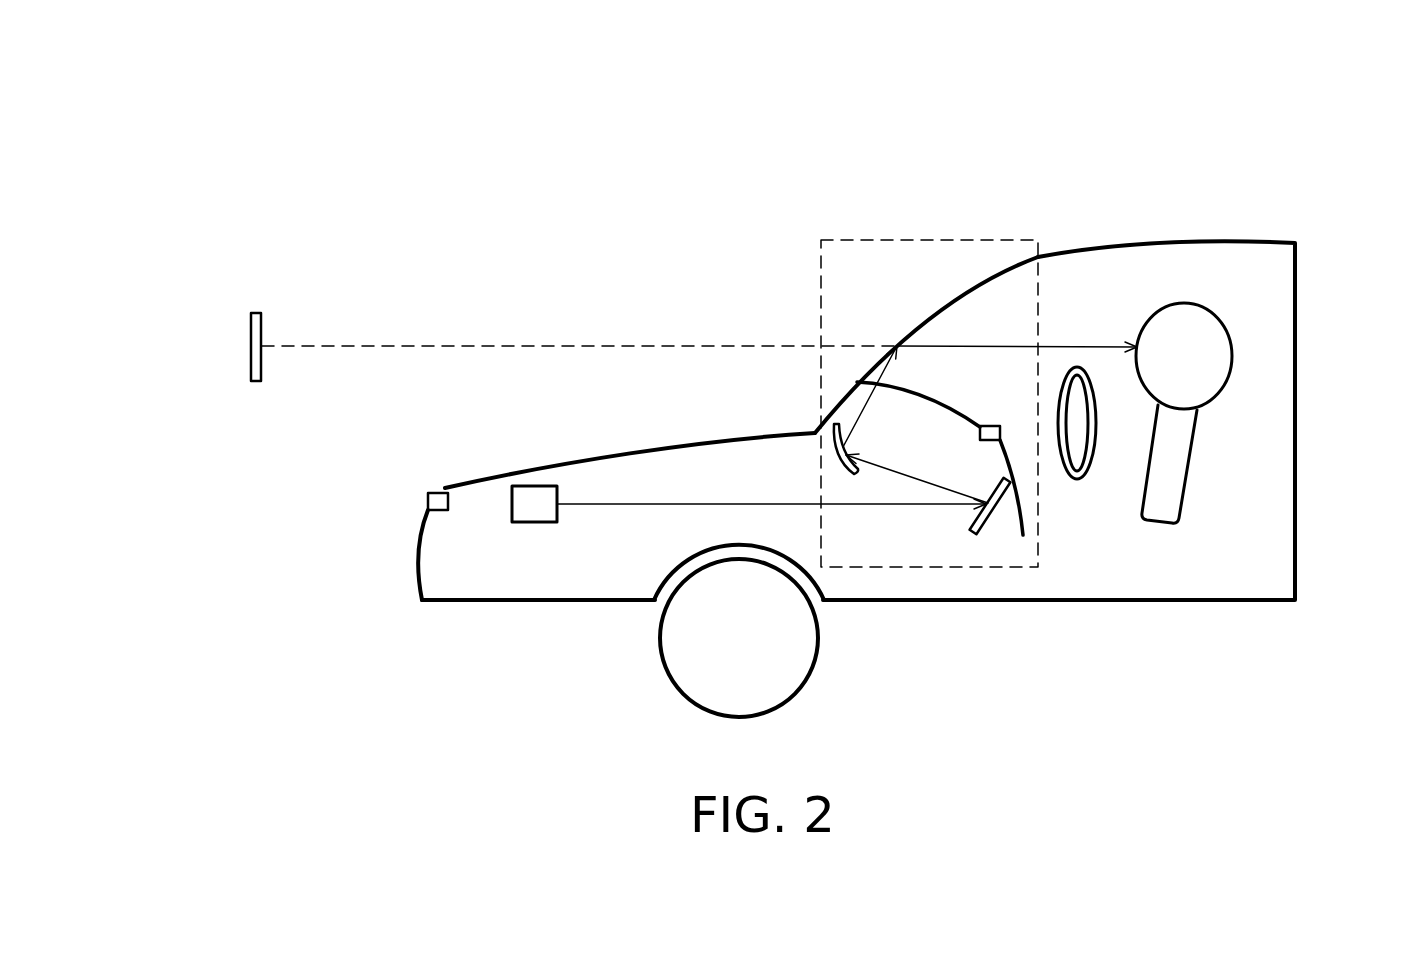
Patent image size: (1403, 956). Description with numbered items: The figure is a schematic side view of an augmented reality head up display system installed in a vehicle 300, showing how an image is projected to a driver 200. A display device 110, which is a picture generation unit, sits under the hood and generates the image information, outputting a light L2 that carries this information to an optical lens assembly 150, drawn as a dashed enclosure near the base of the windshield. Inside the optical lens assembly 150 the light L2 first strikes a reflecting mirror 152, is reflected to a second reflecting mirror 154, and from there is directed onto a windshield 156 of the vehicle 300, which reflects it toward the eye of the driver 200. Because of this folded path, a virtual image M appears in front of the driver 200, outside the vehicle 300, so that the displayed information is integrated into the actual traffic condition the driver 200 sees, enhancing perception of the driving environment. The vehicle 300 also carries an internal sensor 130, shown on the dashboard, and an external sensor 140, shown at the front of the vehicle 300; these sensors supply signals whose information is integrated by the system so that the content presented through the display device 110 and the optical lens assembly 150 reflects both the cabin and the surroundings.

The display device 110 is at (530, 497).
The internal sensor 130 is at (978, 433).
The external sensor 140 is at (428, 500).
The optical lens assembly 150 is at (920, 240).
The reflecting mirror 152 is at (985, 535).
The reflecting mirror 154 is at (828, 423).
The windshield 156 is at (950, 303).
The driver 200 is at (1213, 358).
The vehicle 300 is at (1199, 602).
The virtual image M is at (239, 292).
The light L2 is at (637, 505).